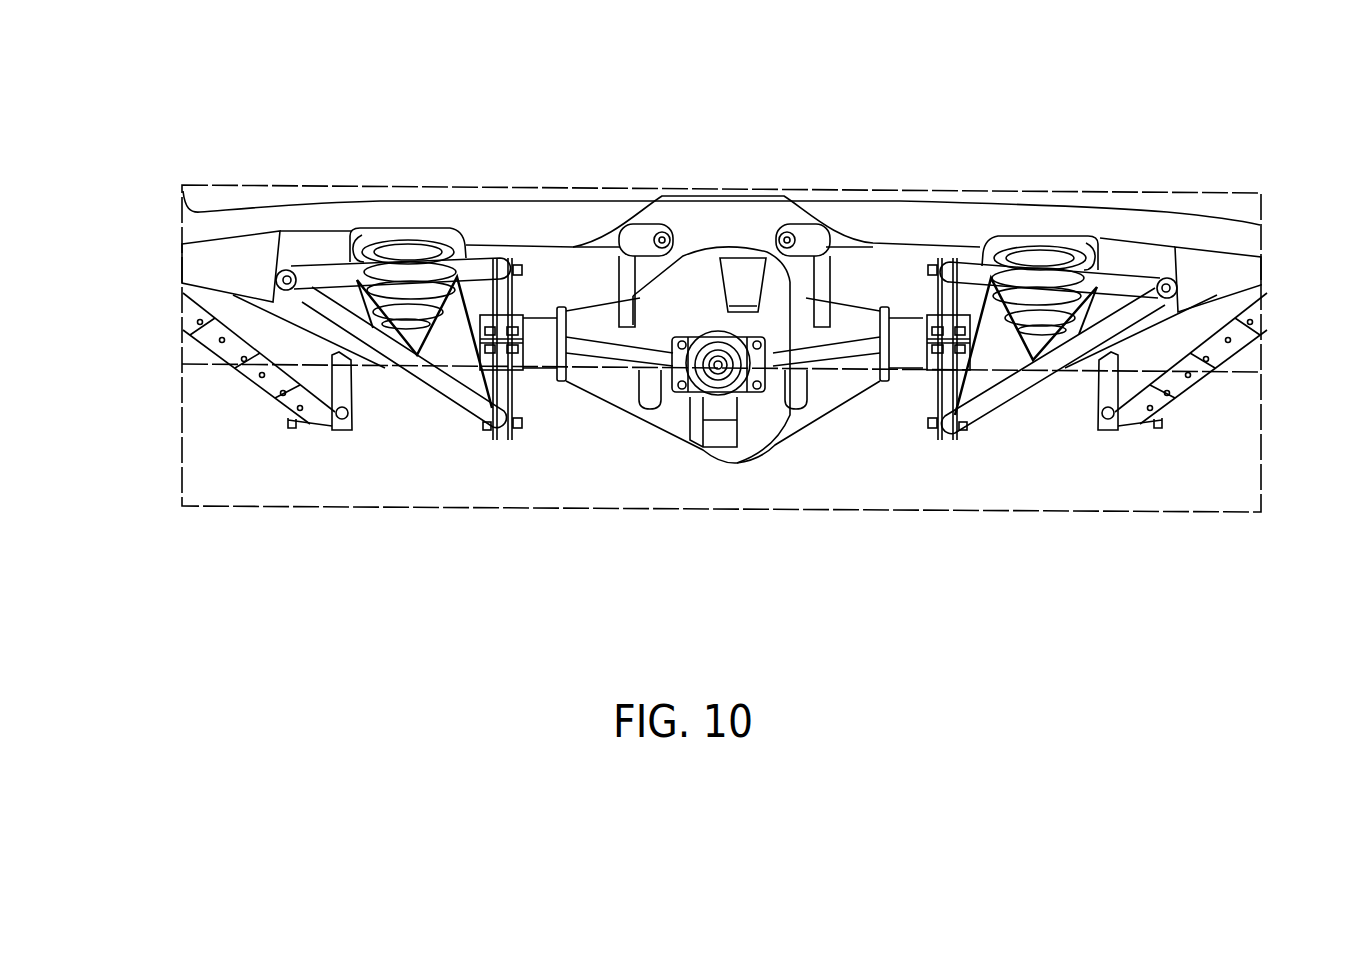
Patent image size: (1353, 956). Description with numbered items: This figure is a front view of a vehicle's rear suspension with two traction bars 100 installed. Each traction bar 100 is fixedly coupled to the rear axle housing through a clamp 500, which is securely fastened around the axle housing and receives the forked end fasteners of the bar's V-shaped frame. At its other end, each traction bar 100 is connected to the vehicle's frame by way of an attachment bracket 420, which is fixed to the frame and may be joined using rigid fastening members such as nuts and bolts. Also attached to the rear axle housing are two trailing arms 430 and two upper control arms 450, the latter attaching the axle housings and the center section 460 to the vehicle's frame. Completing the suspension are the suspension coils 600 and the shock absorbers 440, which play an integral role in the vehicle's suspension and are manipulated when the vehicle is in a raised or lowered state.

The traction bar 100 is at (422, 270).
The attachment bracket 420 is at (240, 265).
The trailing arm 430 is at (272, 357).
The shock absorber 440 is at (421, 287).
The upper control arm 450 is at (622, 228).
The center section 460 is at (737, 276).
The clamp 500 is at (518, 362).
The suspension coil 600 is at (350, 240).